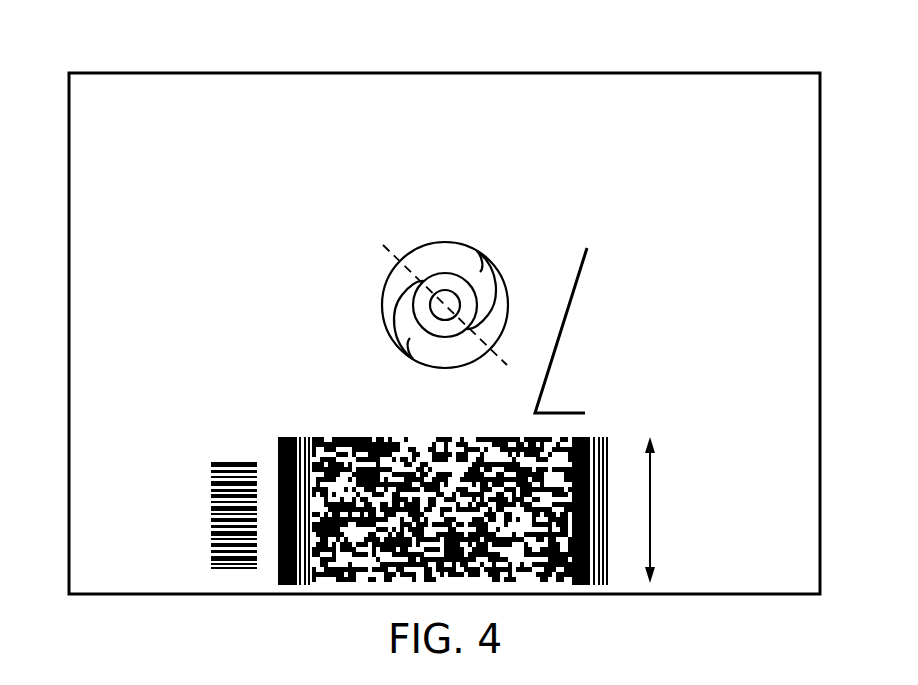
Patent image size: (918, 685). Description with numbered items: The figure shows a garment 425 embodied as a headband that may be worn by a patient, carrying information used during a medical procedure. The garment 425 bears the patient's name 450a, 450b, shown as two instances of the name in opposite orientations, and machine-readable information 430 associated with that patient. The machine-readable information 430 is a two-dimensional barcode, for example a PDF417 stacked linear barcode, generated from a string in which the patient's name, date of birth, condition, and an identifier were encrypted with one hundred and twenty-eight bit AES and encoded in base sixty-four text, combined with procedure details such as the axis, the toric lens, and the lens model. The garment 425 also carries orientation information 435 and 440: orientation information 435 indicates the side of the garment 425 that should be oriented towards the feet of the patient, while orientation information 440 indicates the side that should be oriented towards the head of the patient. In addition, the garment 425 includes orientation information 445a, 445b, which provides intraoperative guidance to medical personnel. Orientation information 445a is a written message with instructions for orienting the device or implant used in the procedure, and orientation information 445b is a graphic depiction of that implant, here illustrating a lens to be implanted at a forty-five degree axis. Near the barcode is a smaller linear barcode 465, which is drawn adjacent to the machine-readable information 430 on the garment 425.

The garment 425 is at (445, 72).
The machine-readable information 430 is at (279, 450).
The orientation information 435 is at (670, 529).
The orientation information 440 is at (675, 495).
The orientation information 445a is at (322, 184).
The orientation information 445b is at (382, 306).
The name 450a is at (385, 150).
The name 450b is at (385, 91).
The linear barcode 465 is at (226, 462).